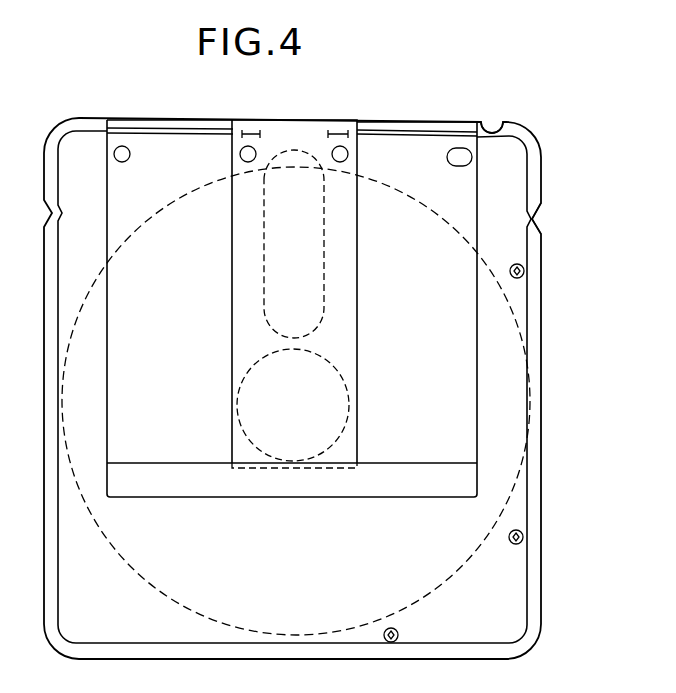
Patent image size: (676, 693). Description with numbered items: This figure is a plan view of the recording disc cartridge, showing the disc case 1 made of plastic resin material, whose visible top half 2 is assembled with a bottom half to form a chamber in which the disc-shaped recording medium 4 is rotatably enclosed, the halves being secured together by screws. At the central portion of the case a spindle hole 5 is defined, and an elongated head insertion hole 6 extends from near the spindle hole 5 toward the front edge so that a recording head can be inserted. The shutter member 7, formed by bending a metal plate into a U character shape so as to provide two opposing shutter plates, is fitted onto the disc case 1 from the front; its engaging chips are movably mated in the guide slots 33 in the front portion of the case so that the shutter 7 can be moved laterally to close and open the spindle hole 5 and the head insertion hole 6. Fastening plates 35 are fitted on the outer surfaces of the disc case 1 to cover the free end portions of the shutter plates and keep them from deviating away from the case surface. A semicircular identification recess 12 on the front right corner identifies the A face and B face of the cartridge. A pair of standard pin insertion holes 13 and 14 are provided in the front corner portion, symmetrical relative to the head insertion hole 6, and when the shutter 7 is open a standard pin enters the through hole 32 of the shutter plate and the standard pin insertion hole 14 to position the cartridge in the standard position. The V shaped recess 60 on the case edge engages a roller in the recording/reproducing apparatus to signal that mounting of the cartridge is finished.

The disc case 1 is at (536, 129).
The top half 2 is at (521, 583).
The recording medium 4 is at (504, 322).
The spindle hole 5 is at (337, 377).
The head insertion hole 6 is at (323, 223).
The shutter member 7 is at (354, 280).
The identification recess 12 is at (492, 123).
The standard pin insertion hole 13 is at (123, 146).
The standard pin insertion hole 14 is at (455, 149).
The through holes 32 is at (245, 151).
The guide slots 33 is at (162, 129).
The fastening plates 35 is at (470, 481).
The V shaped recess 60 is at (545, 211).